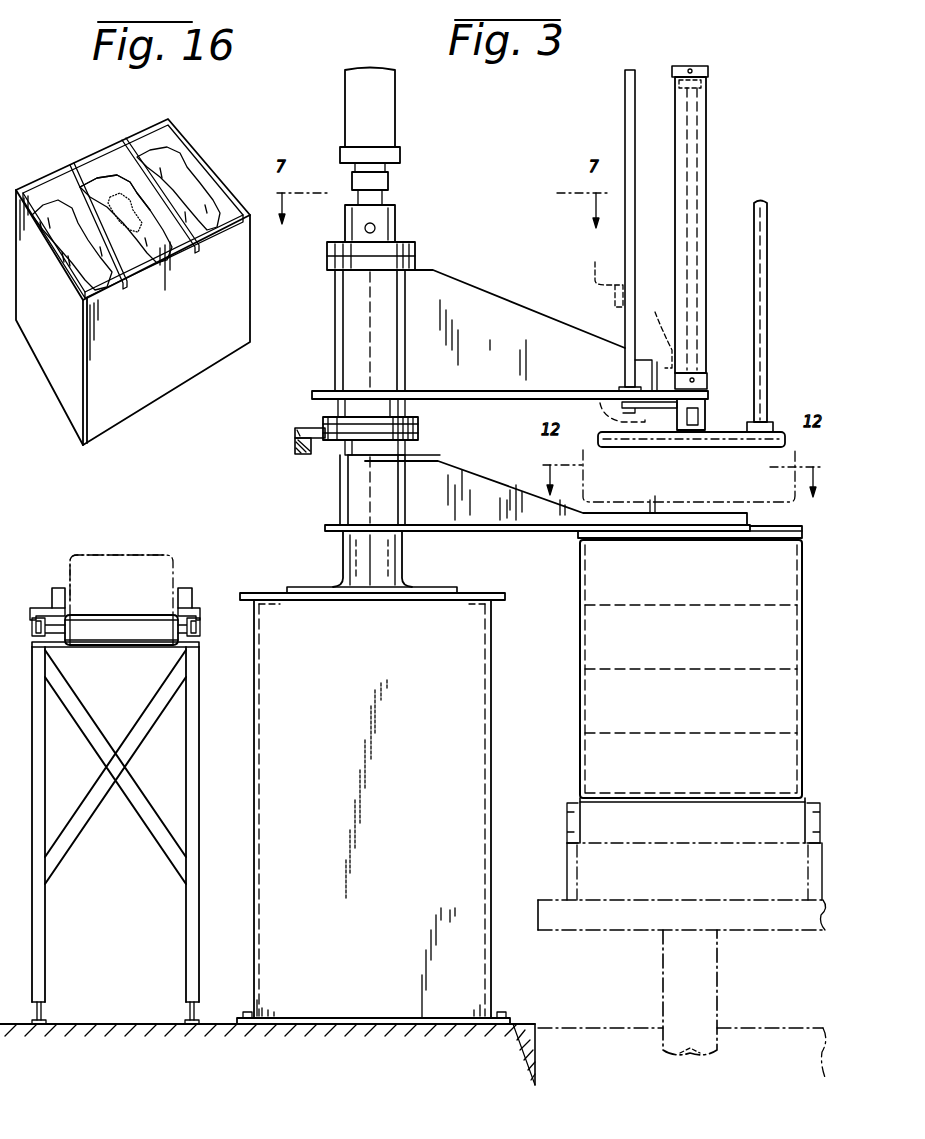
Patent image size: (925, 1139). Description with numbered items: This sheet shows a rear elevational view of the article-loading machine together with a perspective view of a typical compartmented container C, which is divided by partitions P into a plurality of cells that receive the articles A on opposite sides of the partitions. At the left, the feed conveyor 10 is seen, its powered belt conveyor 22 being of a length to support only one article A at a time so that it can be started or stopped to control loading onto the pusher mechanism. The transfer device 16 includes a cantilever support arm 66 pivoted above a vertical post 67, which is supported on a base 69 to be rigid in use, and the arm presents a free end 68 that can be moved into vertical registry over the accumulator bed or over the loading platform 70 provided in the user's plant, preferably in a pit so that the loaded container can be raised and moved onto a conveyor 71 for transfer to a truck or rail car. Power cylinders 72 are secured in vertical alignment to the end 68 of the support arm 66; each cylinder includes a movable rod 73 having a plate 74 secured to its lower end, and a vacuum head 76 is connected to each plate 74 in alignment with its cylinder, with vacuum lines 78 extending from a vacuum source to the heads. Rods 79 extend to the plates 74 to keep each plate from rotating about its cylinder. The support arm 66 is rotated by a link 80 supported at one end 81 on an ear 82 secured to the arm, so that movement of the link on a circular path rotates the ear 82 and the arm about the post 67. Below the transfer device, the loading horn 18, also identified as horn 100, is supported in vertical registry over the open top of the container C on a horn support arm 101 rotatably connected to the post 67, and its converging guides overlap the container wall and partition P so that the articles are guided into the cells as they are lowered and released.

In FIG. 3, the feed conveyor 10 is at (30, 596).
In FIG. 3, the transfer device 16 is at (462, 282).
In FIG. 3, the loading horn 18 is at (470, 472).
In FIG. 3, the powered belt conveyor 22 is at (134, 634).
In FIG. 3, the cantilever support arm 66 is at (538, 320).
In FIG. 3, the vertical post 67 is at (354, 582).
In FIG. 3, the free end of support arm 68 is at (707, 392).
In FIG. 3, the base 69 is at (264, 590).
In FIG. 3, the loading platform 70 is at (603, 922).
In FIG. 3, the conveyor 71 is at (562, 822).
In FIG. 3, the power cylinders 72 is at (706, 120).
In FIG. 3, the movable rod 73 is at (697, 165).
In FIG. 3, the plate 74 is at (705, 407).
In FIG. 3, the vacuum head 76 is at (632, 447).
In FIG. 3, the vacuum lines 78 is at (767, 258).
In FIG. 3, the rods 79 is at (635, 252).
In FIG. 3, the link 80 is at (325, 445).
In FIG. 3, the end of link 81 is at (304, 456).
In FIG. 3, the ear 82 is at (300, 440).
In FIG. 3, the loading horn 100 is at (766, 538).
In FIG. 3, the horn support arm 101 is at (496, 533).
In FIG. 16, the article A is at (208, 222).
In FIG. 3, the article A is at (156, 556).
In FIG. 16, the container C is at (175, 373).
In FIG. 3, the container C is at (580, 713).
In FIG. 16, the partitions P is at (120, 152).